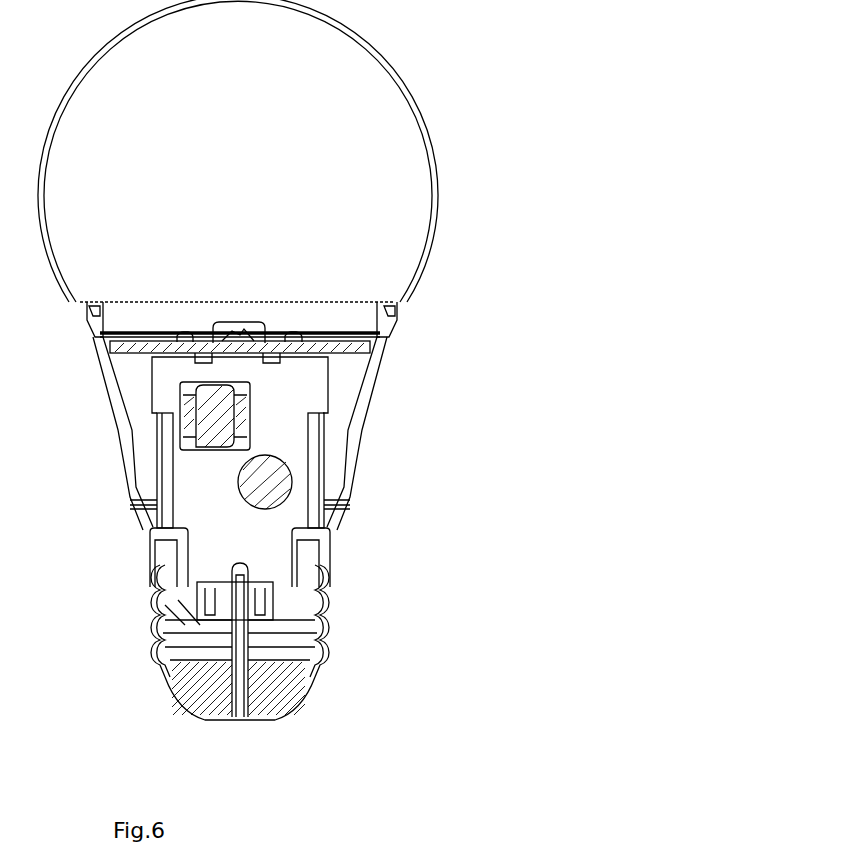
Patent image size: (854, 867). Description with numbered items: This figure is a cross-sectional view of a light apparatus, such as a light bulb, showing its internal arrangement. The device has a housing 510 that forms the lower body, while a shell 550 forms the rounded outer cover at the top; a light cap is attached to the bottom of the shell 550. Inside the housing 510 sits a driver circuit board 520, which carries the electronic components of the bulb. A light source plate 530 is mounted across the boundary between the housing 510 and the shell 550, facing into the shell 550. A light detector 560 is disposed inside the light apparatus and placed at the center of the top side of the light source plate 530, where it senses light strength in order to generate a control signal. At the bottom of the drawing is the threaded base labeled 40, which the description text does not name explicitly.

The shell 550 is at (380, 98).
The light detector 560 is at (250, 338).
The light source plate 530 is at (357, 310).
The housing 510 is at (350, 423).
The driver circuit board 520 is at (273, 483).
The screw base 40 is at (330, 628).